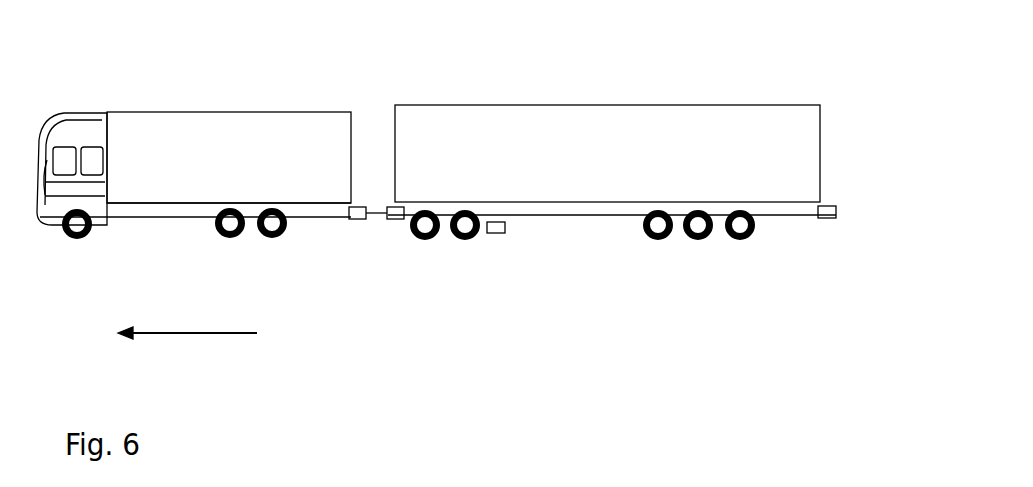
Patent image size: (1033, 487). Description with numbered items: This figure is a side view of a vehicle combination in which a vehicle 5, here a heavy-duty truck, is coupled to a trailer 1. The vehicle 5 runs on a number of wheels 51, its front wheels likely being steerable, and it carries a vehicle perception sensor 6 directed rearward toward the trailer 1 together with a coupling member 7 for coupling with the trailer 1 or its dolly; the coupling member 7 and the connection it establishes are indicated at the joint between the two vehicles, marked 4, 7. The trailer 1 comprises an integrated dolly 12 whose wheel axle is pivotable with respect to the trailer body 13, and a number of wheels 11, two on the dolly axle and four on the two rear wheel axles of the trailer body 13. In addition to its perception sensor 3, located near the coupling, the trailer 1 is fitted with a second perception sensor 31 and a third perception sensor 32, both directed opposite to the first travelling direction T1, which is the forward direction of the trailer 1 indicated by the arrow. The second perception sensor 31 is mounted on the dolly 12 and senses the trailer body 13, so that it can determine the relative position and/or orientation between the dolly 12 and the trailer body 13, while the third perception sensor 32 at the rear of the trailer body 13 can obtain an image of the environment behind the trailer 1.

The trailer 1 is at (723, 90).
The perception sensor 3 is at (398, 220).
The coupling connection 4 is at (357, 304).
The vehicle 5 is at (124, 92).
The vehicle perception sensor 6 is at (355, 206).
The coupling member 7 is at (347, 222).
The wheels 11 is at (467, 238).
The integrated dolly 12 is at (440, 268).
The trailer body 13 is at (585, 105).
The second perception sensor 31 is at (493, 222).
The third perception sensor 32 is at (822, 219).
The wheels 51 is at (88, 237).
The first travelling direction T1 is at (169, 309).